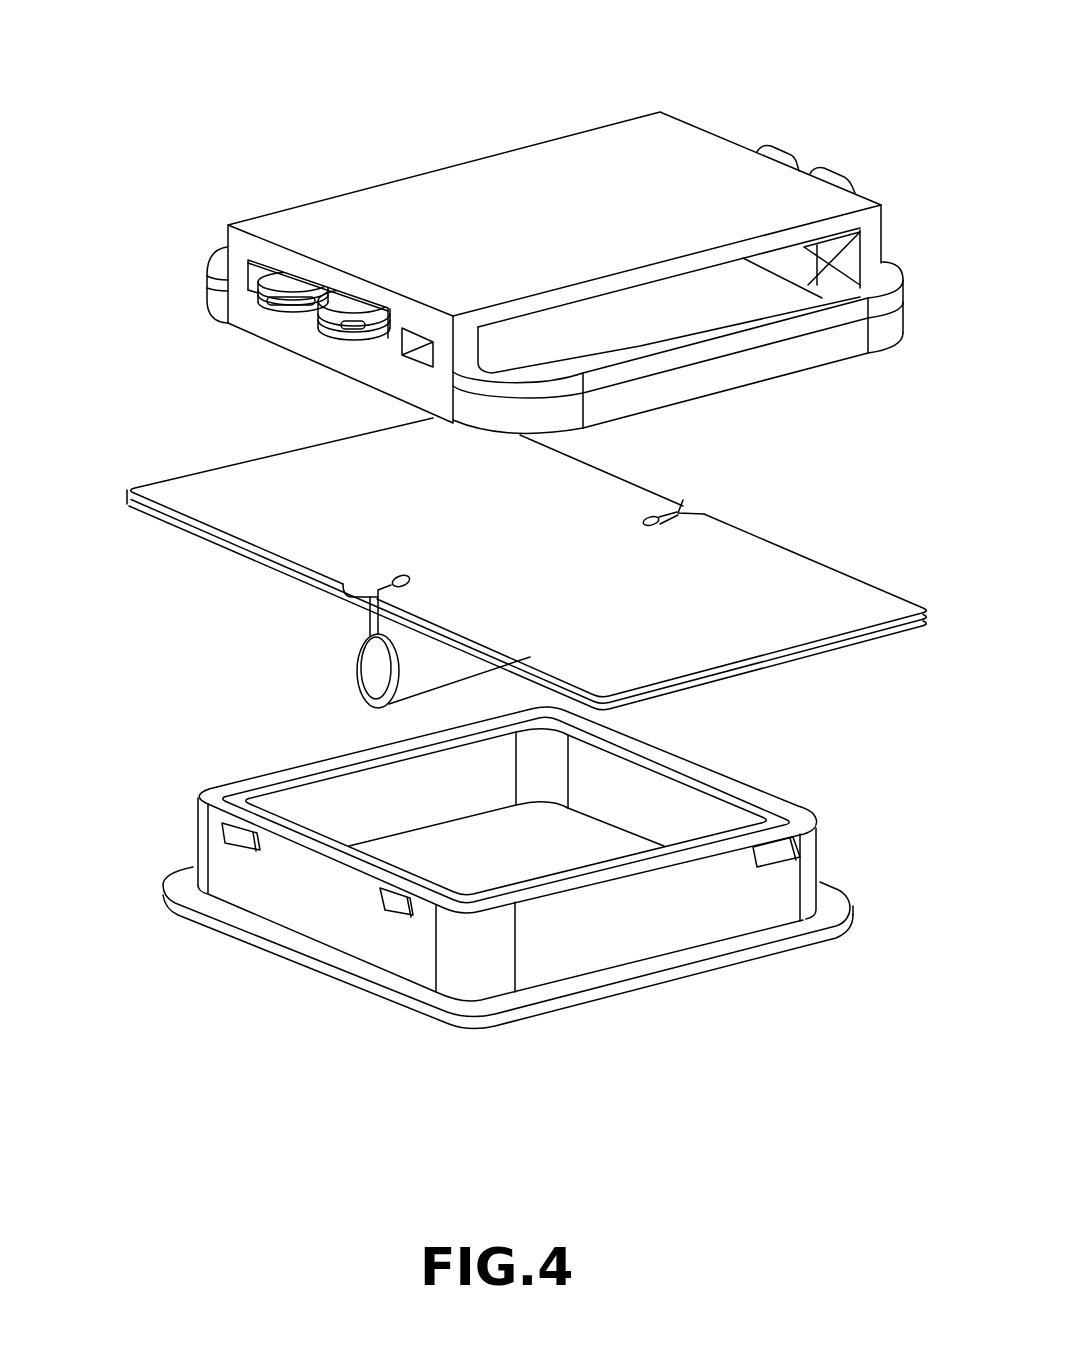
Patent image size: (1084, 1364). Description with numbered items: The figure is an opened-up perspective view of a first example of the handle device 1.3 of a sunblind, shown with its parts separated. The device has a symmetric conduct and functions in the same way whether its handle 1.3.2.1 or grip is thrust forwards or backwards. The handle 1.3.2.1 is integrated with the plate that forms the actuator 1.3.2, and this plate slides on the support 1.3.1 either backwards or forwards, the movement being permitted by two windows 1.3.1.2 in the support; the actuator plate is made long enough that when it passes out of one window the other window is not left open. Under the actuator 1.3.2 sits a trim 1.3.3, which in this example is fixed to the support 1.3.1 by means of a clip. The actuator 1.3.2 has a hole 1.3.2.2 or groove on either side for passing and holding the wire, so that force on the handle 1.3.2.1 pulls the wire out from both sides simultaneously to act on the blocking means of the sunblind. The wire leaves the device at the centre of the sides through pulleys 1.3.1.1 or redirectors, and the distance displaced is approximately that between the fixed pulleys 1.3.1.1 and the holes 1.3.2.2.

The handle device 1.3 is at (234, 161).
The support 1.3.1 is at (547, 180).
The pulleys 1.3.1.1 is at (317, 338).
The windows 1.3.1.2 is at (793, 288).
The actuator 1.3.2 is at (238, 500).
The handle 1.3.2.1 is at (377, 668).
The holes 1.3.2.2 is at (410, 580).
The trim 1.3.3 is at (324, 900).